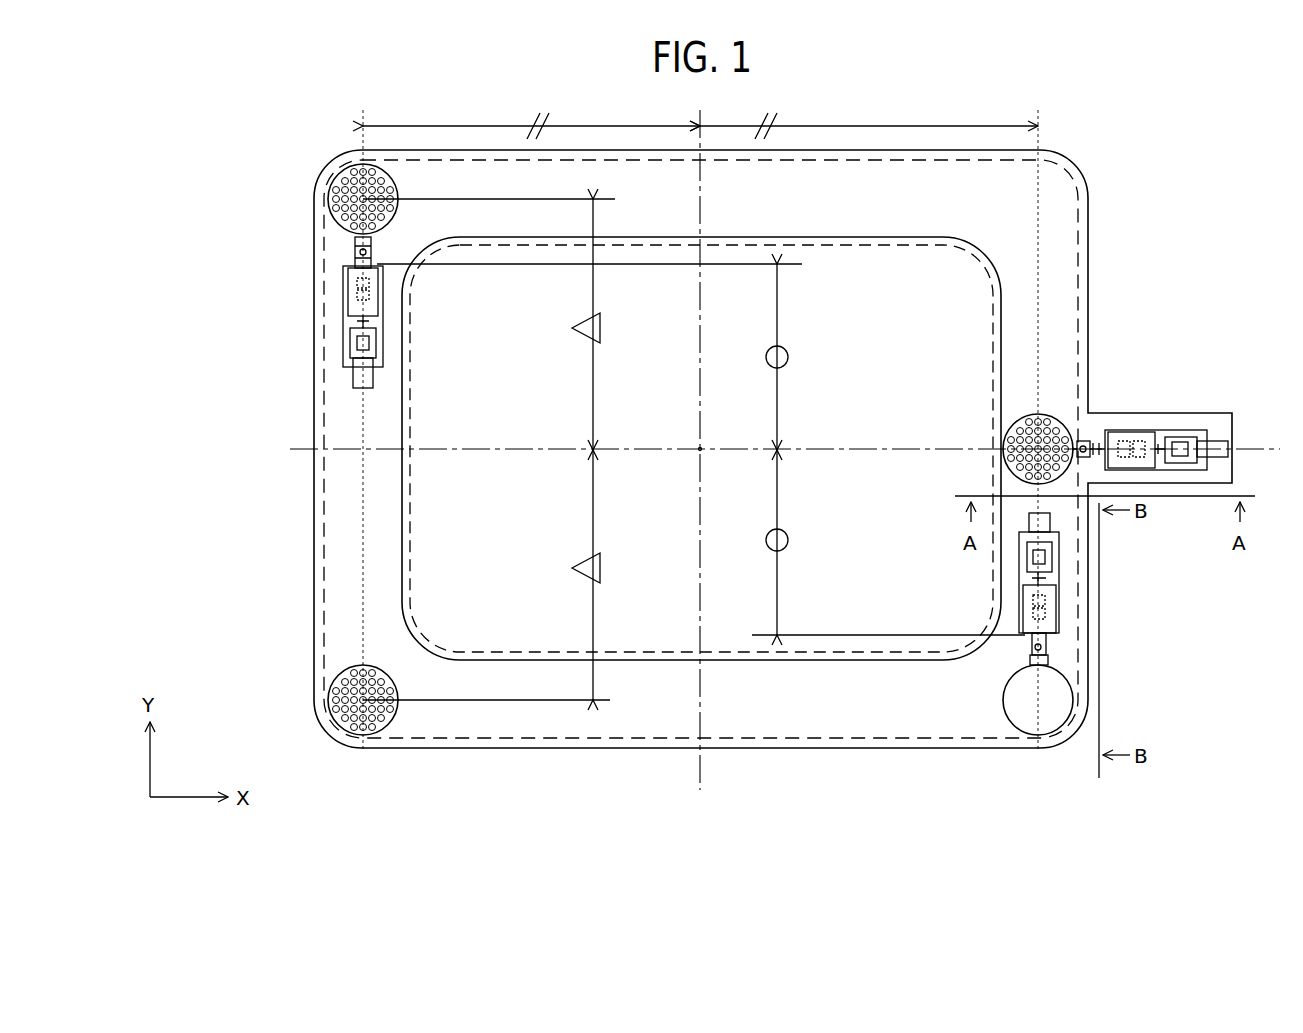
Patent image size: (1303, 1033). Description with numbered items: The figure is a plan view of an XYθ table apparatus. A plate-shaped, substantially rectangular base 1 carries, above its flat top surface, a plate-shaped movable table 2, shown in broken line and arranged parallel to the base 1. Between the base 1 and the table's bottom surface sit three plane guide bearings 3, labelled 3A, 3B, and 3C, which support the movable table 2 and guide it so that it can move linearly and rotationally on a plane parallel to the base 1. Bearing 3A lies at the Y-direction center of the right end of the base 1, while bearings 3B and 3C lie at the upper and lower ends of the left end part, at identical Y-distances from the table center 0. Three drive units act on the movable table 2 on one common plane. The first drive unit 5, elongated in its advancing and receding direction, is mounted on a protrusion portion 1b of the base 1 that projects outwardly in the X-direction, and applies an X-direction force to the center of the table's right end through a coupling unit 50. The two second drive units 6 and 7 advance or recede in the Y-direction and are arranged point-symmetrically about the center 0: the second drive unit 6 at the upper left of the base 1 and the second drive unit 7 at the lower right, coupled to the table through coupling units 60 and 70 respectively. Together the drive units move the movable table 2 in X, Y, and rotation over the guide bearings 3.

The base 1 is at (1082, 172).
The protrusion portion 1b is at (1218, 428).
The movable table 2 is at (1083, 232).
The plane guide bearing 3 is at (690, 483).
The plane guide bearing 3A is at (1052, 408).
The plane guide bearing 3B is at (335, 226).
The plane guide bearing 3C is at (399, 718).
The first drive unit 5 is at (1170, 428).
The coupling unit 50 is at (1102, 426).
The second drive unit 6 is at (340, 297).
The coupling unit 60 is at (345, 262).
The second drive unit 7 is at (1064, 577).
The coupling unit 70 is at (1062, 640).
The center 0 is at (697, 446).